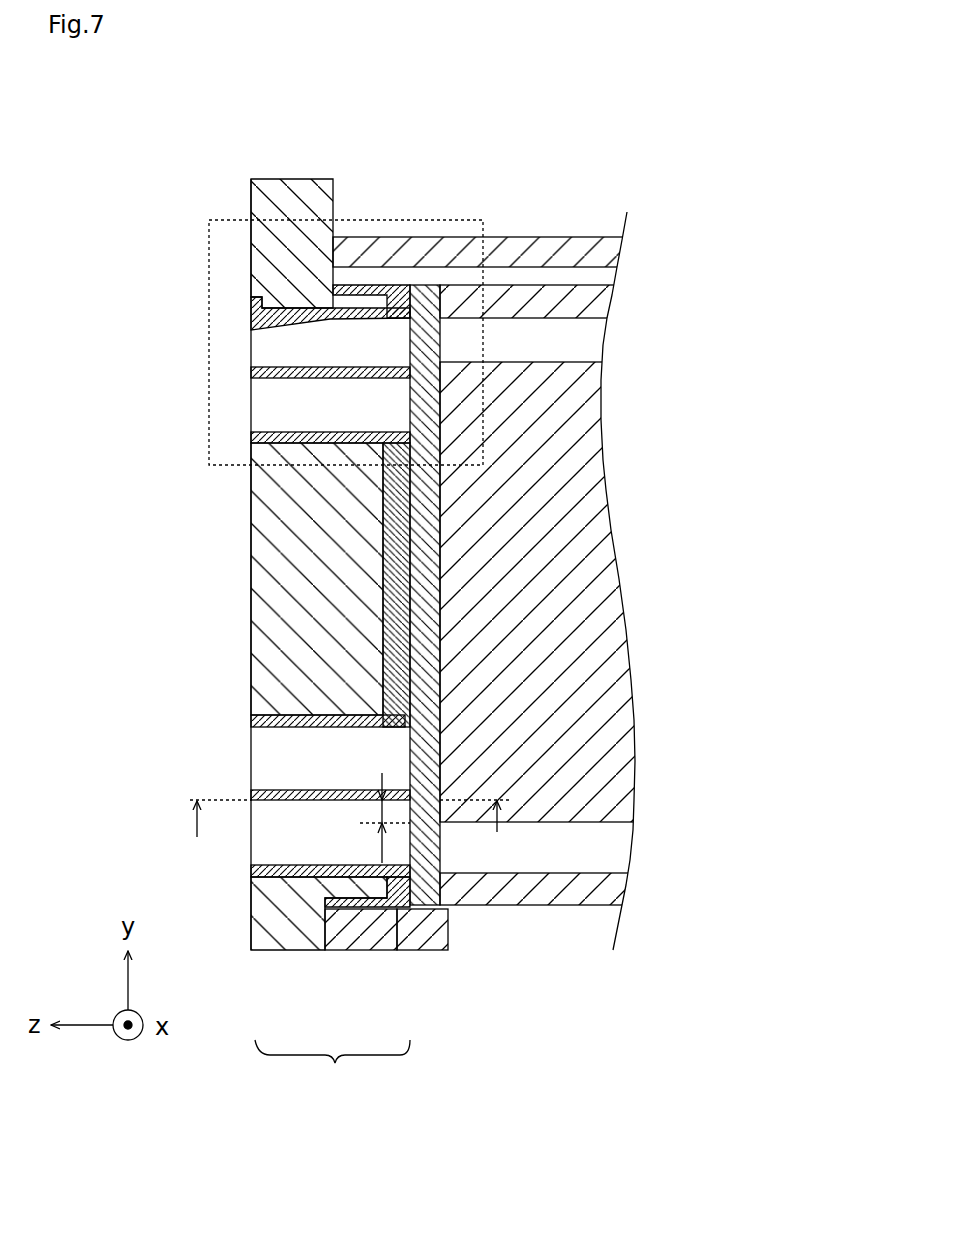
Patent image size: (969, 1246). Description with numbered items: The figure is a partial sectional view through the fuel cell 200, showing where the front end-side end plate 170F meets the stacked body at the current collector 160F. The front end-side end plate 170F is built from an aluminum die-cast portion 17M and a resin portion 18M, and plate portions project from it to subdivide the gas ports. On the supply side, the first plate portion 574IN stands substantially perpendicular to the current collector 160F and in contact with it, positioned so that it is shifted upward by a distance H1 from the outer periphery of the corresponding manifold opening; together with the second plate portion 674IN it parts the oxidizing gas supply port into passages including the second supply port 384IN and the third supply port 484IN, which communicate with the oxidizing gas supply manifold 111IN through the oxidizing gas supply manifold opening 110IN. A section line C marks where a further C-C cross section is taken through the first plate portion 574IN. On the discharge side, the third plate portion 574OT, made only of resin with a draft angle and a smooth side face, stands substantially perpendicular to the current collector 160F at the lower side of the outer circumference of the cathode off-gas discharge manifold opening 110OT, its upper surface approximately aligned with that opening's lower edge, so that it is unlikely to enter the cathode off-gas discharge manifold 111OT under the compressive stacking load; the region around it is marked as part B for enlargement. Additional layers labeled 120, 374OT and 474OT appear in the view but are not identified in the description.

The fuel cell 200 is at (611, 132).
The part B is at (209, 245).
The current collector 160F is at (430, 286).
The insulating plate 120 is at (438, 945).
The cathode off-gas discharge manifold 111OT is at (562, 328).
The cathode off-gas discharge manifold opening 110OT is at (415, 332).
The outer third seal 374OT is at (267, 355).
The third plate portion 574OT is at (287, 379).
The outer fourth seal 474OT is at (267, 419).
The third supply port 484IN is at (398, 756).
The first plate portion 574IN is at (280, 790).
The second plate portion 674IN is at (263, 853).
The second supply port 384IN is at (400, 845).
The oxidizing gas supply manifold opening 110IN is at (433, 888).
The oxidizing gas supply manifold 111IN is at (588, 858).
The aluminum die-cast portion 17M is at (288, 940).
The resin portion 18M is at (392, 950).
The front end-side end plate 170F is at (332, 1070).
The distance H1 is at (369, 819).
The C-C sectional surface C is at (344, 828).